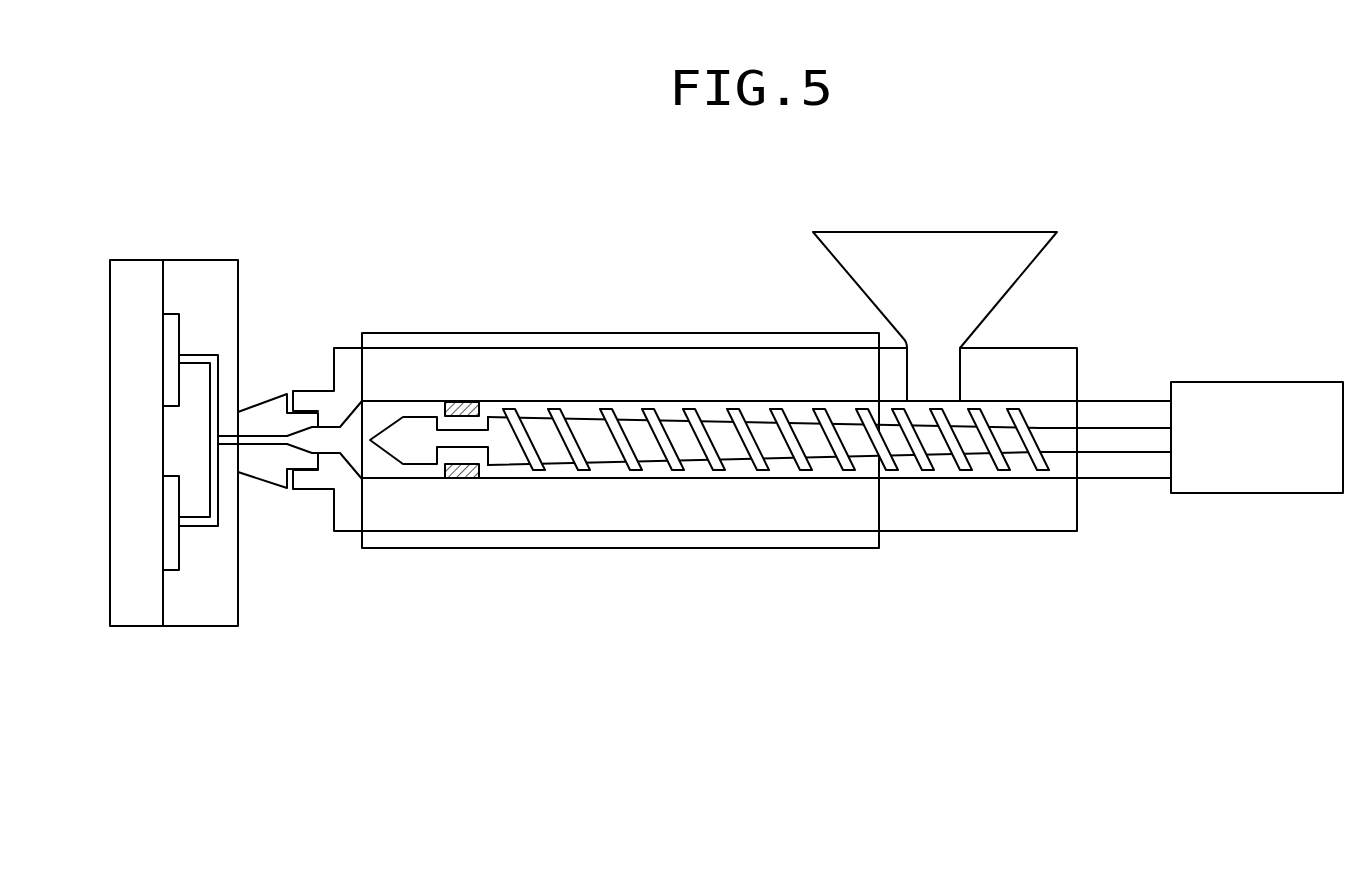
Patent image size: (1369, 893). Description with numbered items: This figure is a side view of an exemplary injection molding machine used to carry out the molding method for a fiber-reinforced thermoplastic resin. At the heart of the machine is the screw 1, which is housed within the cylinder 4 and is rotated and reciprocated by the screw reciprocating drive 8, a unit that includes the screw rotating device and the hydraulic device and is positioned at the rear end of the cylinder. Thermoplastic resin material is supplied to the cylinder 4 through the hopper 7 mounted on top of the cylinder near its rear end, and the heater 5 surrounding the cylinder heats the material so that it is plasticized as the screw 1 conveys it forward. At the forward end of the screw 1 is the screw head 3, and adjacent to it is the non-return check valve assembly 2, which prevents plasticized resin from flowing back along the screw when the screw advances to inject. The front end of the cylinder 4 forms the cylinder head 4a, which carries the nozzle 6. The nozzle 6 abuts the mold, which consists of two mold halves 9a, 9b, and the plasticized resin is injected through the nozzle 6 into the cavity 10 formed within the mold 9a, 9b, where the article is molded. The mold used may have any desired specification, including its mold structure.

The screw 1 is at (603, 447).
The non-return check valve assembly 2 is at (470, 402).
The screw head 3 is at (417, 457).
The cylinder 4 is at (570, 365).
The cylinder head 4a is at (345, 367).
The heater 5 is at (693, 340).
The nozzle 6 is at (259, 412).
The hopper 7 is at (945, 257).
The screw reciprocating drive 8 is at (1235, 397).
The mold 9a is at (213, 298).
The mold 9b is at (133, 273).
The cavity 10 is at (172, 545).